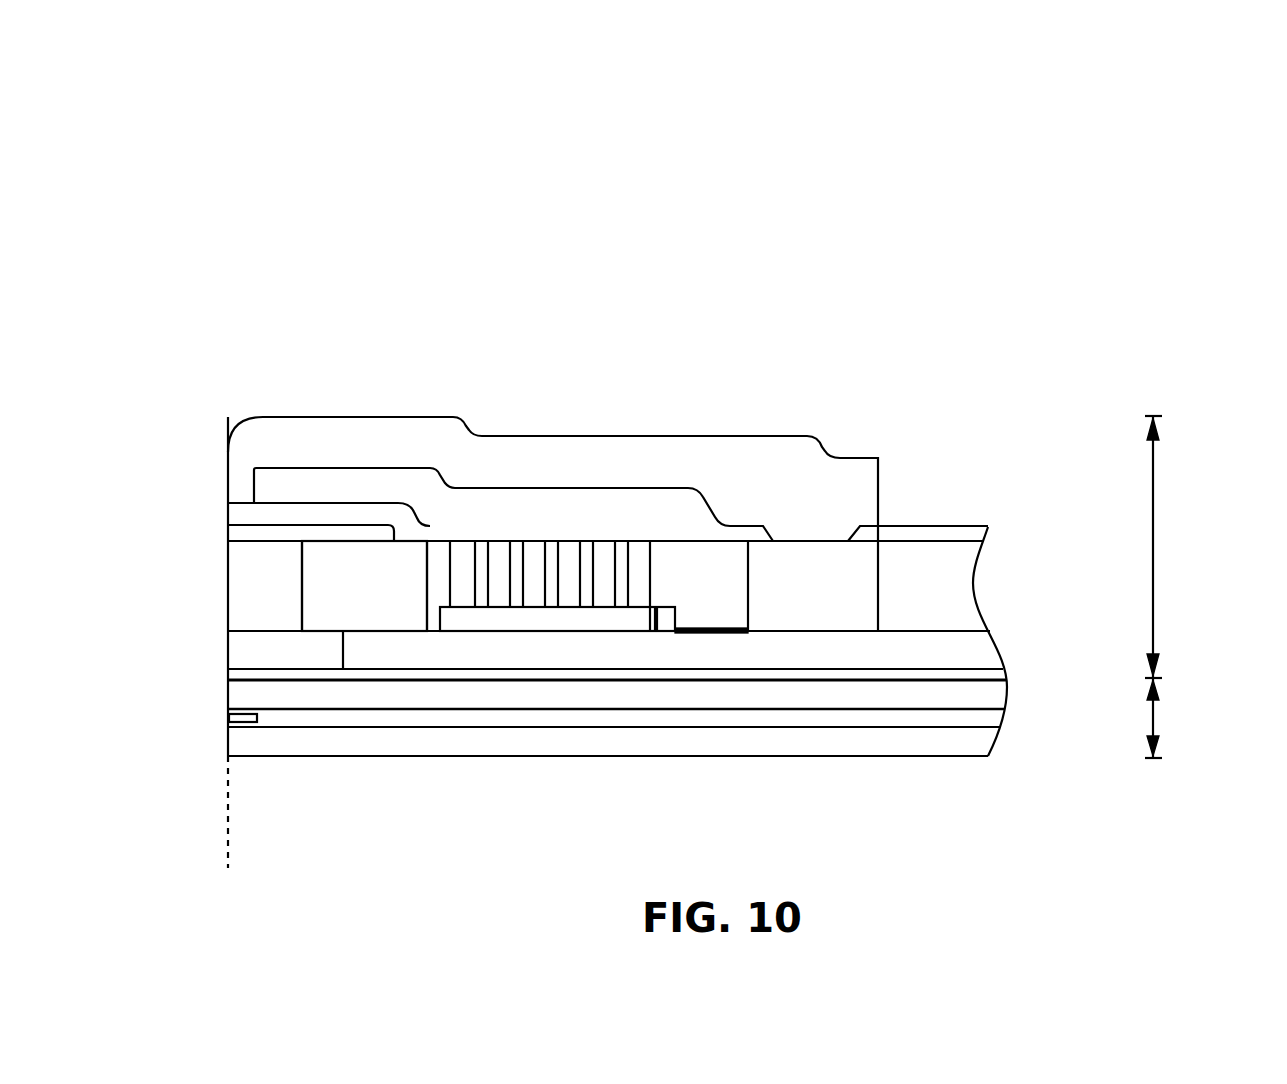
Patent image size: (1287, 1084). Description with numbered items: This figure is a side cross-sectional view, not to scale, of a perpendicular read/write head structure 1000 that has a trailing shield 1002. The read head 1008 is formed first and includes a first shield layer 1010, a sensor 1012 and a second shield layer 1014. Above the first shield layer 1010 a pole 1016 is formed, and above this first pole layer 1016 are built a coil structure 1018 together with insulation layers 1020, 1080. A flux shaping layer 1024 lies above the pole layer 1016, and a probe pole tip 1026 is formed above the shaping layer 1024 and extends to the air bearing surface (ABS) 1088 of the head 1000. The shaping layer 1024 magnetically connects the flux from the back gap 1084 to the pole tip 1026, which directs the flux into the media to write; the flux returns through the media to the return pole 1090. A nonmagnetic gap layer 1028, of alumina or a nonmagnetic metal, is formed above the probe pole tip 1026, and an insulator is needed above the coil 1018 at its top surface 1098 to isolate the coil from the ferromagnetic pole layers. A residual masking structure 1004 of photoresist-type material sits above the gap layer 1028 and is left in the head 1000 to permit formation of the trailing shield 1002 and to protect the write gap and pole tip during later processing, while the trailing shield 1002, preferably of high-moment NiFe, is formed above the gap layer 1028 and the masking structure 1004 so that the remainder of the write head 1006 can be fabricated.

The perpendicular read/write head structure 1000 is at (250, 283).
The trailing shield 1002 is at (226, 489).
The residual masking structure 1004 is at (603, 507).
The write head 1006 is at (1202, 547).
The read head 1008 is at (1197, 718).
The first shield layer 1010 is at (226, 753).
The sensor 1012 is at (226, 724).
The second shield layer 1014 is at (226, 698).
The pole 1016 is at (993, 645).
The coil structure 1018 is at (450, 577).
The insulation layer 1020 is at (697, 613).
The flux shaping layer 1024 is at (318, 597).
The probe pole tip 1026 is at (226, 538).
The nonmagnetic gap layer 1028 is at (743, 540).
The insulation layer 1080 is at (565, 615).
The back gap 1084 is at (975, 582).
The air bearing surface (ABS) 1088 is at (265, 812).
The return pole 1090 is at (383, 415).
The top surface 1098 is at (494, 545).